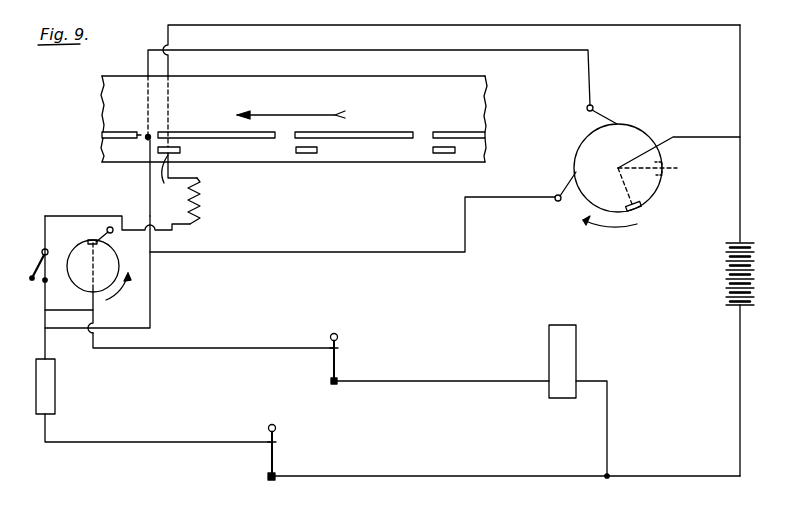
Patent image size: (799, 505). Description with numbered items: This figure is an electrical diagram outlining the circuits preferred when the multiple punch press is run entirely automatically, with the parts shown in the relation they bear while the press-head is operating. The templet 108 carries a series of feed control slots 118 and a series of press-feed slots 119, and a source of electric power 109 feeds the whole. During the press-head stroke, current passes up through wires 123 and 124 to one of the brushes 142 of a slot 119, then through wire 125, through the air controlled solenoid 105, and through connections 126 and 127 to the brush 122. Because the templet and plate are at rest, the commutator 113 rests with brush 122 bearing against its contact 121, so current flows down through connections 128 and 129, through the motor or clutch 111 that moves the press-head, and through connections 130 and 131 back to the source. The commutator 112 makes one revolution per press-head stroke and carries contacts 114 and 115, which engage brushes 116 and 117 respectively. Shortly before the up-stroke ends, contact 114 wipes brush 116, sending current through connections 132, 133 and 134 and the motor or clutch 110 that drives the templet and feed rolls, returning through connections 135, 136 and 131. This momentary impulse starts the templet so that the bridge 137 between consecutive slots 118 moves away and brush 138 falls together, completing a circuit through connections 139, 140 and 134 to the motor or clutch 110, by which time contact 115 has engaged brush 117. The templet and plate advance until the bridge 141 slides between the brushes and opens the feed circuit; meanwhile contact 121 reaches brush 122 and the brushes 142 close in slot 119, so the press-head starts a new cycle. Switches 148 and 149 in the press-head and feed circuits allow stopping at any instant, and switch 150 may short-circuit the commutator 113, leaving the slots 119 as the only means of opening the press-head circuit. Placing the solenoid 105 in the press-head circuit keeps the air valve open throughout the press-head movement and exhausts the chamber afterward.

The air controlled solenoid 105 is at (201, 205).
The templet 108 is at (478, 100).
The source of electric power 109 is at (727, 268).
The motor or clutch 110 is at (51, 392).
The motor or clutch 111 is at (549, 352).
The commutator 112 is at (637, 133).
The commutator 113 is at (76, 277).
The contact 114 is at (664, 170).
The contact 115 is at (641, 208).
The brush 116 is at (566, 189).
The brush 117 is at (595, 118).
The feed control slots 118 is at (102, 134).
The press-feed slots 119 is at (181, 150).
The contact 121 is at (88, 241).
The brush 122 is at (94, 238).
The wire 123 is at (740, 196).
The wire 124 is at (466, 21).
The wire 125 is at (185, 176).
The connection 126 is at (178, 226).
The connection 127 is at (113, 234).
The connection 128 is at (94, 306).
The connection 129 is at (240, 342).
The connection 130 is at (608, 427).
The connection 131 is at (740, 386).
The connection 132 is at (700, 137).
The connection 133 is at (387, 253).
The connection 134 is at (151, 299).
The connection 135 is at (196, 438).
The connection 136 is at (474, 470).
The bridge 137 is at (141, 138).
The brush 138 is at (146, 134).
The connection 139 is at (418, 76).
The connection 140 is at (150, 206).
The bridge 141 is at (280, 138).
The brushes 142 is at (170, 178).
The switch 148 is at (330, 369).
The switch 149 is at (276, 459).
The switch 150 is at (29, 260).